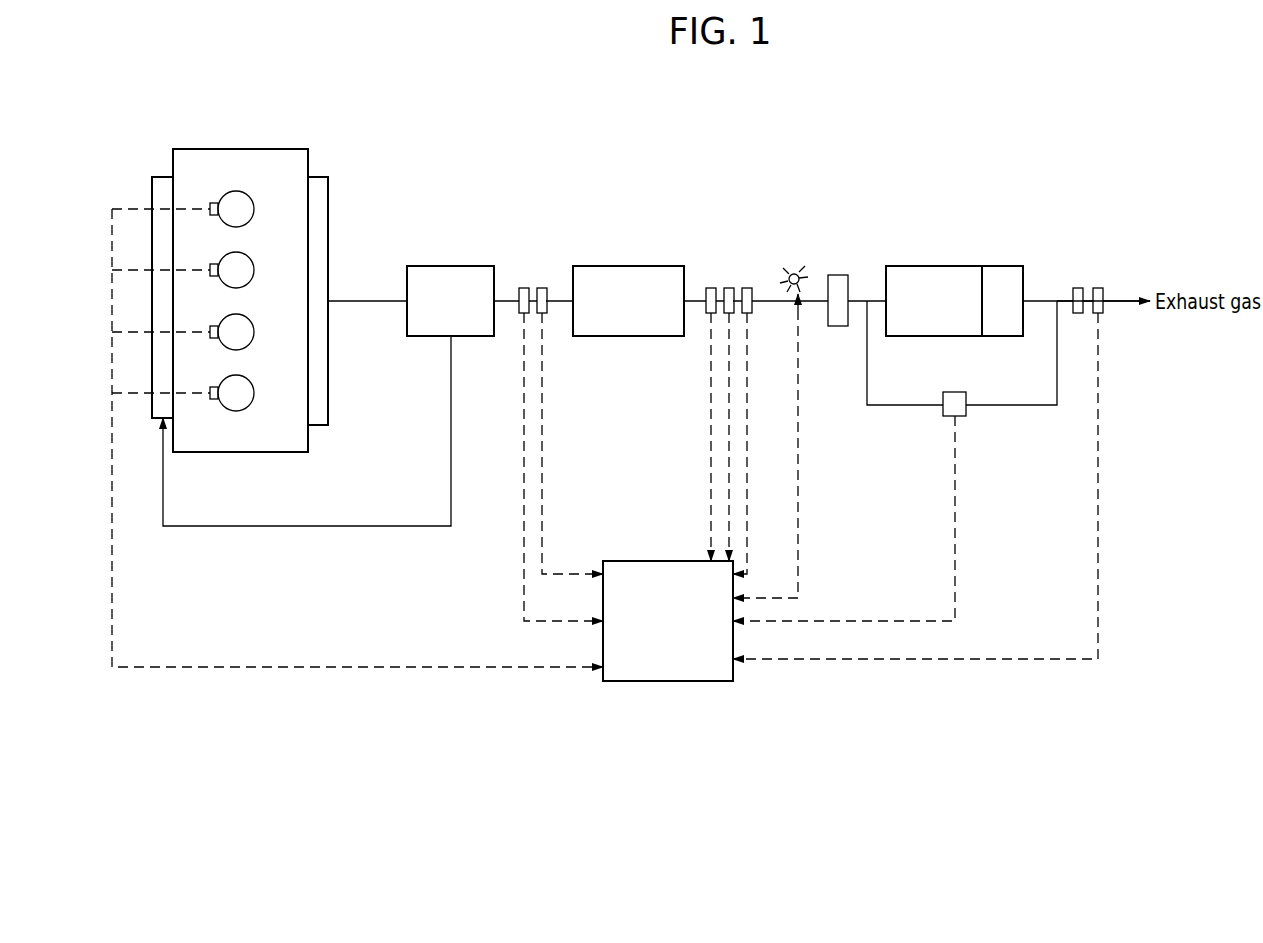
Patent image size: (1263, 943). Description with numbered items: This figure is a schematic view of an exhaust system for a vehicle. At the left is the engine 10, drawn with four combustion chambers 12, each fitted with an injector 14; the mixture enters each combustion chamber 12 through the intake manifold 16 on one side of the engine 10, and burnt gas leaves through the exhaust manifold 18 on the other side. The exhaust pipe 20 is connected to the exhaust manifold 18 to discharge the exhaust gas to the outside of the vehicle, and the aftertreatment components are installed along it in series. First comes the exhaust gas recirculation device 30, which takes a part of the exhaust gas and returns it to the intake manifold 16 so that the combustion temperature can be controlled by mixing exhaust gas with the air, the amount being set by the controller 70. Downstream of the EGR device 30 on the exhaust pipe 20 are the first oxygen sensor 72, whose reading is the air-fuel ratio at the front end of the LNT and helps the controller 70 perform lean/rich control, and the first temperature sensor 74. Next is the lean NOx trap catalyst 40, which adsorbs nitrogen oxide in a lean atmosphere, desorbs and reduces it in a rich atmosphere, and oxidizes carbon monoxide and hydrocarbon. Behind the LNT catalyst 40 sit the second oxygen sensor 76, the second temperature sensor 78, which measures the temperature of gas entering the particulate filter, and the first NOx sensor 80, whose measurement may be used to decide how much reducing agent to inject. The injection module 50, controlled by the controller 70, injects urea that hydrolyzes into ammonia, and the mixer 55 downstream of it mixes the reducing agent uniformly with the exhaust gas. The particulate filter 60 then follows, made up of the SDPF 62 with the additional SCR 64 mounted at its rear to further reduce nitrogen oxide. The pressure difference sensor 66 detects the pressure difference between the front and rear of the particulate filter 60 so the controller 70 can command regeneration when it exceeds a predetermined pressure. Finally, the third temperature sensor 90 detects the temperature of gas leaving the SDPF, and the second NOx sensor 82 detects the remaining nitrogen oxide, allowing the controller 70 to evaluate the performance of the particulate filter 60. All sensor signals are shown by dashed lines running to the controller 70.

The engine 10 is at (230, 252).
The combustion chamber 12 is at (237, 190).
The injector 14 is at (211, 203).
The intake manifold 16 is at (158, 177).
The exhaust manifold 18 is at (322, 177).
The exhaust pipe 20 is at (369, 300).
The exhaust gas recirculation (EGR) device 30 is at (428, 266).
The lean NOx trap (LNT) catalyst 40 is at (620, 266).
The injection module 50 is at (796, 272).
The mixer 55 is at (838, 275).
The particulate filter 60 is at (957, 254).
The selective catalytic reduction catalyst on a diesel particulate filter (SDPF) 62 is at (905, 266).
The additional selective catalytic reduction catalyst (SCR) 64 is at (1006, 266).
The pressure difference sensor 66 is at (966, 416).
The controller 70 is at (657, 683).
The first oxygen sensor 72 is at (523, 288).
The first temperature sensor 74 is at (542, 288).
The second oxygen sensor 76 is at (709, 288).
The second temperature sensor 78 is at (727, 288).
The first NOx sensor 80 is at (747, 288).
The second NOx sensor 82 is at (1099, 288).
The third temperature sensor 90 is at (1078, 288).